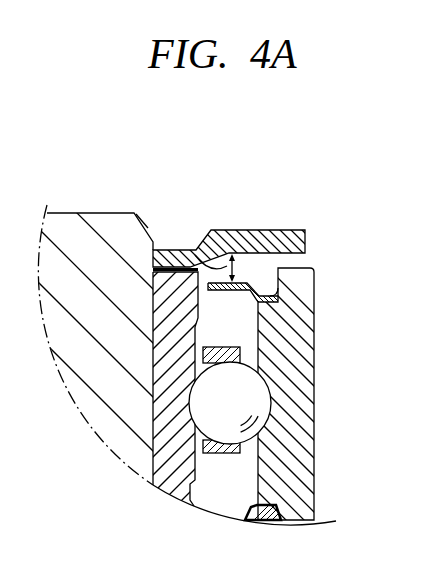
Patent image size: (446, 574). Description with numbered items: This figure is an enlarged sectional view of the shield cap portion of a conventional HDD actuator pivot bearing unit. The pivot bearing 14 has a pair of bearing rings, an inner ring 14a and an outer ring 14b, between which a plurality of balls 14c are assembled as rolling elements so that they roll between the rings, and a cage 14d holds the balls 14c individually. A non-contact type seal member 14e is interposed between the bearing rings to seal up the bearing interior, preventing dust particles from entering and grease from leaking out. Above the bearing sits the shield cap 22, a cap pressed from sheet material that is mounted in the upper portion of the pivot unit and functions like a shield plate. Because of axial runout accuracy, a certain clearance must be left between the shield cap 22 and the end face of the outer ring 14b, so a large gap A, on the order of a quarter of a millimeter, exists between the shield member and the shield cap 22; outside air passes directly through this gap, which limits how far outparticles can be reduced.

The shield cap 22 is at (269, 230).
The gap A is at (196, 251).
The pivot bearing 14 is at (317, 300).
The inner ring 14a is at (196, 482).
The outer ring 14b is at (308, 332).
The balls 14c is at (255, 398).
The cage 14d is at (241, 353).
The seal member 14e is at (281, 297).